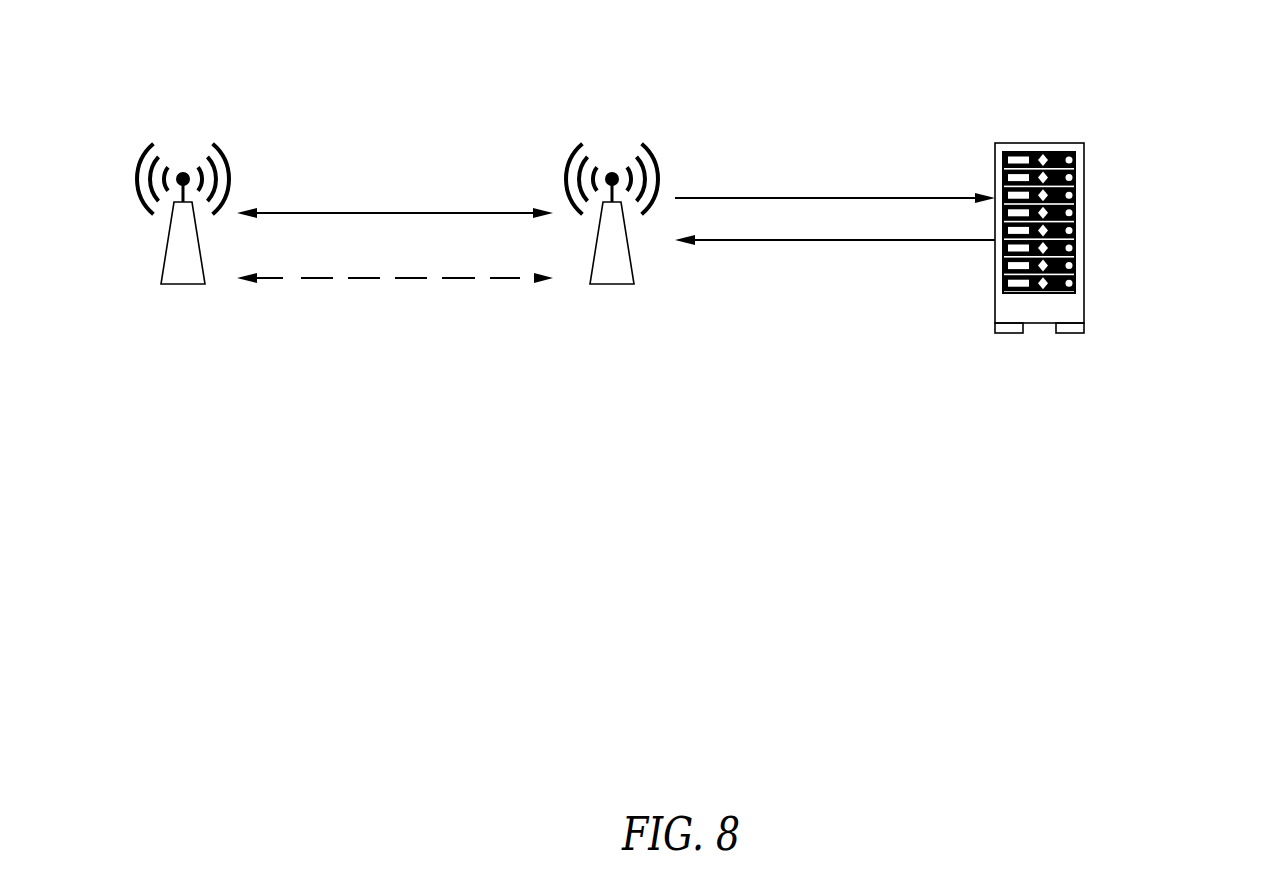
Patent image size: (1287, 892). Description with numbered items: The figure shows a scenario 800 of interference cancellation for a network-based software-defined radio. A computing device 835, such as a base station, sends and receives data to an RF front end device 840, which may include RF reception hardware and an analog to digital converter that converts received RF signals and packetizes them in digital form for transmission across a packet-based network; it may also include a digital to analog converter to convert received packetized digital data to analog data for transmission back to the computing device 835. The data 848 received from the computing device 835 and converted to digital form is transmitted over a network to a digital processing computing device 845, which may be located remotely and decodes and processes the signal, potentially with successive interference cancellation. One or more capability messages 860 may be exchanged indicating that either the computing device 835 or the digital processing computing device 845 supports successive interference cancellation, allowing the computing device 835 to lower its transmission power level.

The scenario 800 is at (988, 49).
The computing device 835 is at (167, 245).
The RF front end device 840 is at (628, 253).
The digital processing computing device 845 is at (1084, 273).
The data 848 is at (278, 214).
The capability messages 860 is at (278, 279).